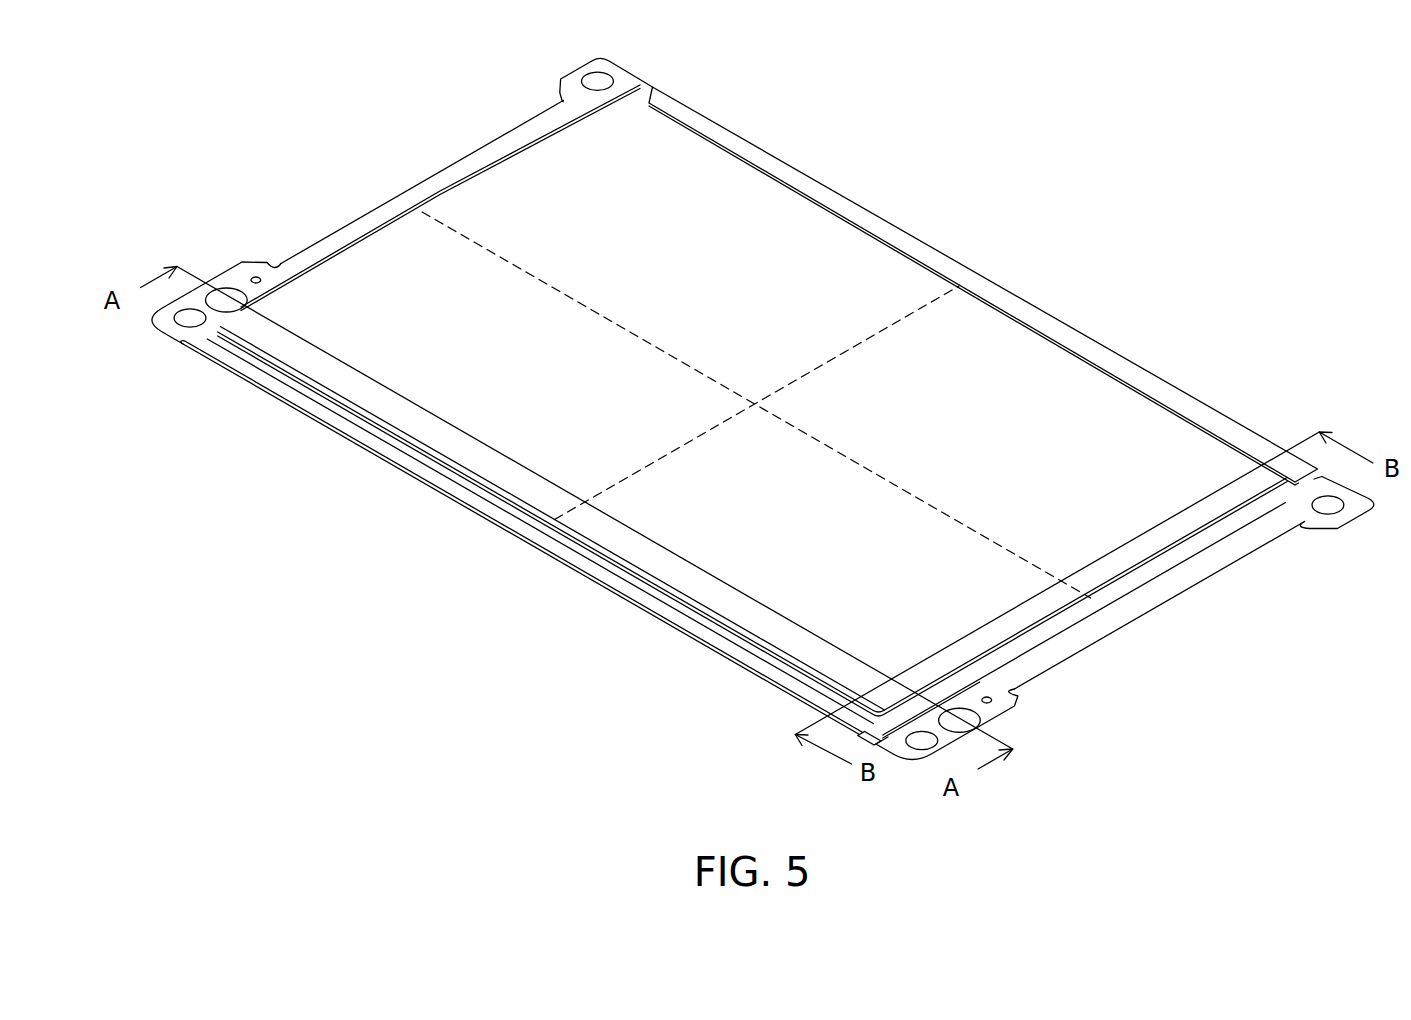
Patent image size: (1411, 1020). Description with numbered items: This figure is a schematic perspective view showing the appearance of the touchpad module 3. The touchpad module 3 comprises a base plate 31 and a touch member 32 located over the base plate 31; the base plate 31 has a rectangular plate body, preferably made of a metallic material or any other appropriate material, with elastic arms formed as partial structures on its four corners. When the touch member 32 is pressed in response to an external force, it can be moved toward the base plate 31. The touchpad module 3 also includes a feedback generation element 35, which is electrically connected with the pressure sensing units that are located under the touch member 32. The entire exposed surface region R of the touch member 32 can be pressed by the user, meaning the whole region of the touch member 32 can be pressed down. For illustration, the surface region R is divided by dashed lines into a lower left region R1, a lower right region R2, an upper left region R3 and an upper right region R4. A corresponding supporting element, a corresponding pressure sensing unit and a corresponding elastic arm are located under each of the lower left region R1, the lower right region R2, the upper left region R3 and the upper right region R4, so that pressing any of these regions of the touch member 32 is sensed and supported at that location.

The touchpad module 3 is at (1256, 194).
The base plate 31 is at (1150, 598).
The touch member 32 is at (1055, 370).
The feedback generation element 35 is at (553, 522).
The exposed surface region R is at (300, 68).
The lower left region R1 is at (488, 292).
The lower right region R2 is at (695, 406).
The upper left region R3 is at (632, 249).
The upper right region R4 is at (797, 385).